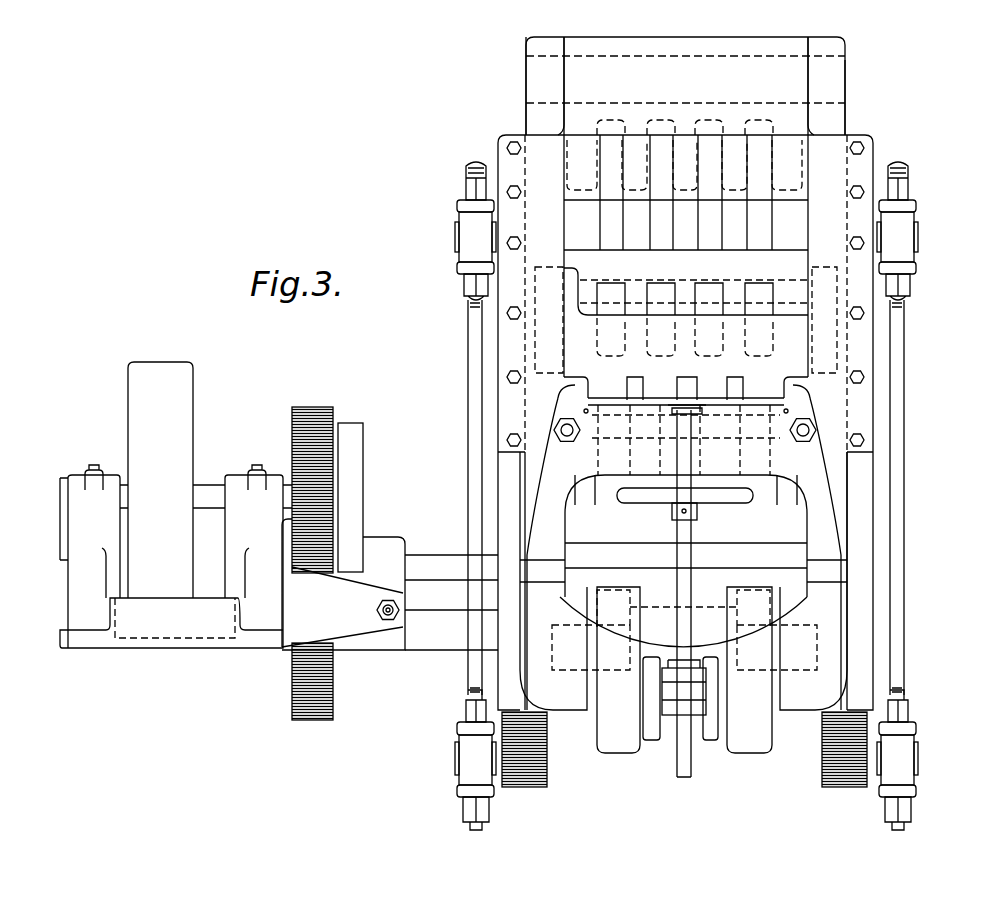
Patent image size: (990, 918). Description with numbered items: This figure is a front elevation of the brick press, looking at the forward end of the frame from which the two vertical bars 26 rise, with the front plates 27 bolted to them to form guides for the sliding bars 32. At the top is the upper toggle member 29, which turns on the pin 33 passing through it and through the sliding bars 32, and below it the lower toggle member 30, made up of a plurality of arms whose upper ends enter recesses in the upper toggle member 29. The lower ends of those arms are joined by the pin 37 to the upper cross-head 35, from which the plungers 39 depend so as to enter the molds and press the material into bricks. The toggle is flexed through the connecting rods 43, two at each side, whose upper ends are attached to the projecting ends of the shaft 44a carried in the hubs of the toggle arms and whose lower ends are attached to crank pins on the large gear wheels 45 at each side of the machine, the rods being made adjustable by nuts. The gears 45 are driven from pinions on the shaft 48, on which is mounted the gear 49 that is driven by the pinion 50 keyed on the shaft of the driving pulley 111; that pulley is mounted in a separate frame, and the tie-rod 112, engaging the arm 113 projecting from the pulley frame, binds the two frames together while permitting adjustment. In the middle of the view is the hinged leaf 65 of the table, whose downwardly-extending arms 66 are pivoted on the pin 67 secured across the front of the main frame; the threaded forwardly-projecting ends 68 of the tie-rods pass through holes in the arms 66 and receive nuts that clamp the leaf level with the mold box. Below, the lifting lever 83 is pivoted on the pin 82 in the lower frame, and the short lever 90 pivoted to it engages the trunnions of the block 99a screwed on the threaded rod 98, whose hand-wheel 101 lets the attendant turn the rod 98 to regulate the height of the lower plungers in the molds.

The vertical bars 26 is at (498, 478).
The front plates 27 is at (508, 336).
The upper toggle member 29 is at (790, 50).
The lower toggle member 30 is at (665, 236).
The sliding bars 32 is at (547, 117).
The pin 33 is at (847, 82).
The upper cross-head 35 is at (580, 353).
The pin 37 is at (802, 327).
The plungers 39 is at (670, 390).
The connecting rods 43 is at (468, 311).
The shaft 44a is at (920, 233).
The large gear wheels 45 is at (536, 767).
The shaft 48 is at (418, 562).
The gear 49 is at (320, 418).
The pinion 50 is at (307, 475).
The hinged leaf 65 is at (728, 372).
The supporting arms 66 is at (540, 530).
The pin 67 is at (707, 550).
The cylindrical forwardly-projecting ends of the tie-rods 68 is at (572, 434).
The pin 82 is at (805, 650).
The lifting lever 83 is at (612, 733).
The short lever 90 is at (655, 733).
The rod 98 is at (683, 607).
The block 99a is at (672, 700).
The hand-wheel 101 is at (660, 493).
The driving pulley 111 is at (155, 378).
The tie-rod 112 is at (392, 611).
The arm 113 is at (308, 613).